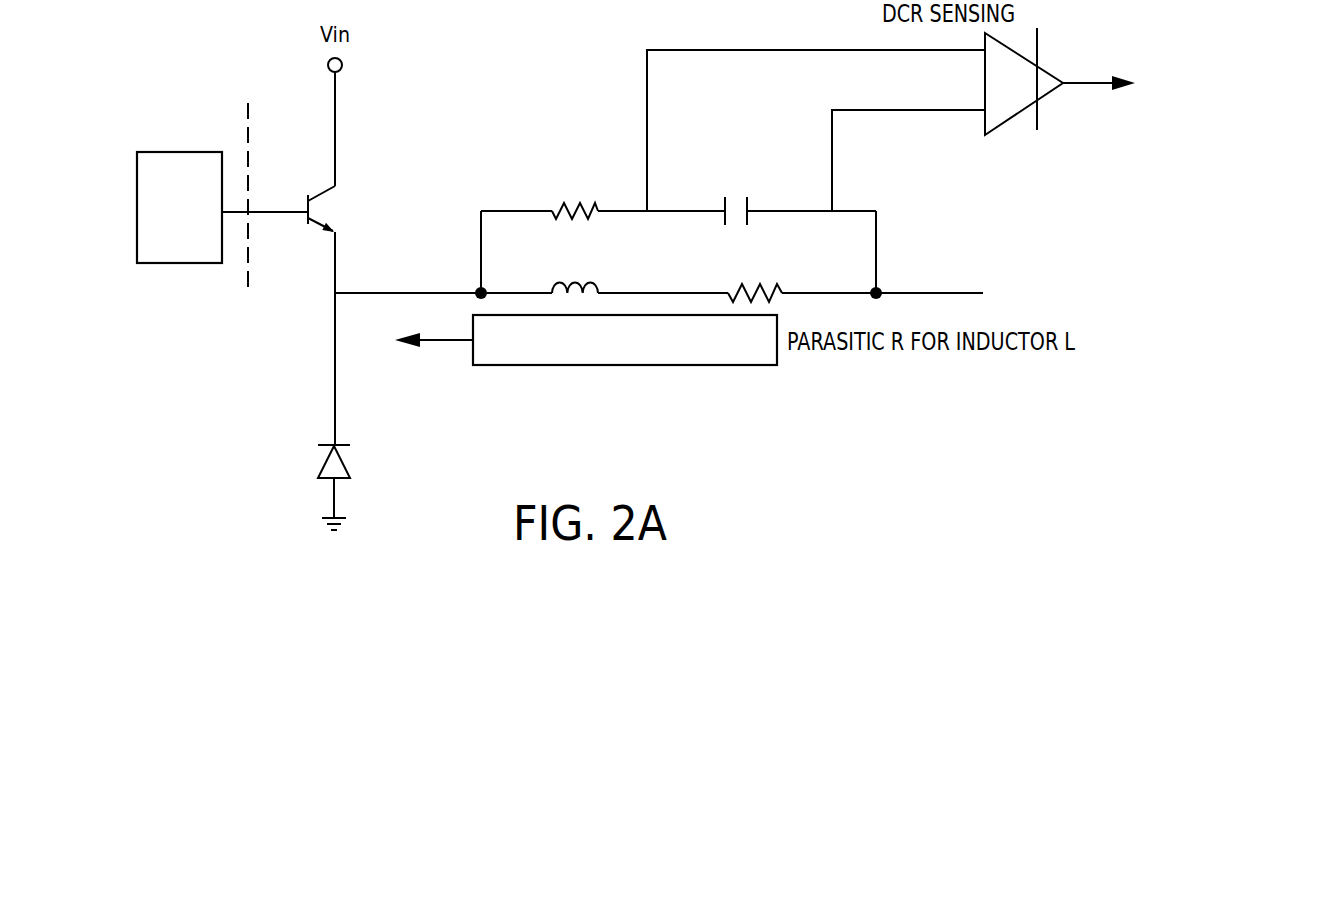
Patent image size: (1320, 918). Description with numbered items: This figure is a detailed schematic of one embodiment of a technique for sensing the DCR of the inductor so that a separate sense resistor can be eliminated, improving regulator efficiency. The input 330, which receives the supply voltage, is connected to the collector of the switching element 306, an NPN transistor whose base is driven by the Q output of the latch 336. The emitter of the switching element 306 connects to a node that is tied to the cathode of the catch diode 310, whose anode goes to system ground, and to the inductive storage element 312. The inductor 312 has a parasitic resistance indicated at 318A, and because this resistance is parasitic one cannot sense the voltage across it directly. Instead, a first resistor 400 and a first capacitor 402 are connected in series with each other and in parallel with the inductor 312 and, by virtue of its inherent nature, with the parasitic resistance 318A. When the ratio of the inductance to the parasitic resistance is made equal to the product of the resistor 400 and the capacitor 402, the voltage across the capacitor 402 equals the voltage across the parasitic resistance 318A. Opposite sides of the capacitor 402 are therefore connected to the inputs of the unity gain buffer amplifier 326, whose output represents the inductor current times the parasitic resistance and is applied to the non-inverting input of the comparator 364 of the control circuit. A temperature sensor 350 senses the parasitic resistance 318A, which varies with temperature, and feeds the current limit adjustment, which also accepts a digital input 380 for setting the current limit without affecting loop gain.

The input 330 is at (341, 60).
The latch 336 is at (157, 152).
The switching element 306 is at (315, 222).
The catch diode 310 is at (343, 462).
The resistor R1 400 is at (562, 205).
The capacitor C1 402 is at (722, 203).
The inductive storage element 312 is at (558, 284).
The parasitic resistance RL 318A is at (738, 284).
The unity gain amplifier 326 is at (1050, 66).
The comparator 364 is at (1197, 213).
The sensor 350 is at (768, 357).
The digital input 380 is at (563, 436).